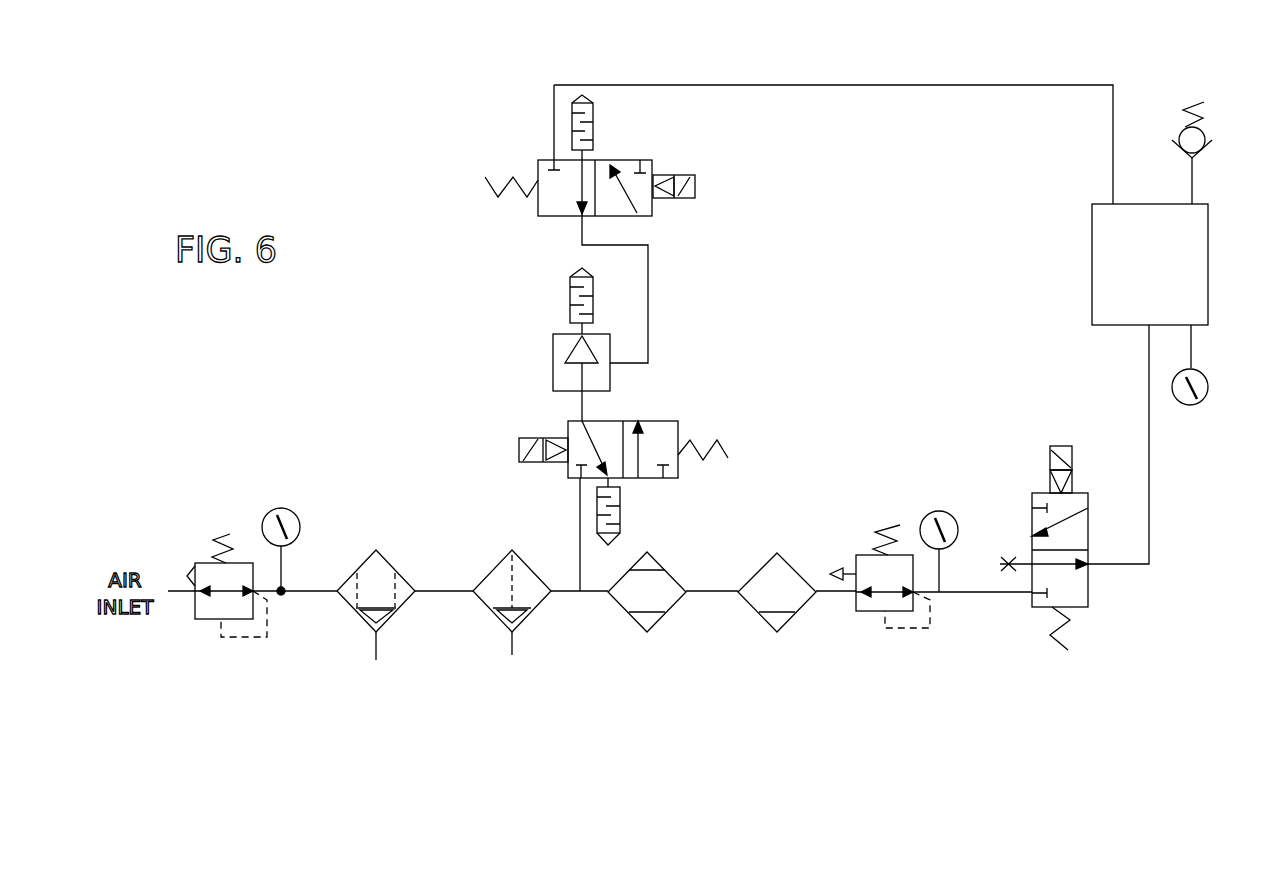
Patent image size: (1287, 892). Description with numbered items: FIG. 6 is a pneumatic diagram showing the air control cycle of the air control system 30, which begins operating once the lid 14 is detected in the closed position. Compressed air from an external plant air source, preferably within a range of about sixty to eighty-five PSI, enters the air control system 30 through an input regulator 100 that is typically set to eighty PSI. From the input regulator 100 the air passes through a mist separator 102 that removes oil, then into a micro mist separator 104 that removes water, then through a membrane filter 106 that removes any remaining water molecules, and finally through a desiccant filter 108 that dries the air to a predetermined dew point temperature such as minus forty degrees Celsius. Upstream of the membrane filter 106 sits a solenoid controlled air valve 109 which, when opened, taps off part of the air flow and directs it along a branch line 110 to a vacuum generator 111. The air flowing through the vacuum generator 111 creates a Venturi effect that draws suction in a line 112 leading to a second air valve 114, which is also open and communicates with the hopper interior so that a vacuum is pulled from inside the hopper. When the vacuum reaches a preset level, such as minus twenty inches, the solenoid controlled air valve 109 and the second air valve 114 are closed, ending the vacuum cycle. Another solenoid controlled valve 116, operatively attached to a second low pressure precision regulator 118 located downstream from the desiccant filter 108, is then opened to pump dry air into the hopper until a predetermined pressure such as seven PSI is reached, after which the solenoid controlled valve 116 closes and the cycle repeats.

The lid 14 is at (1208, 270).
The air control system 30 is at (415, 808).
The input regulator 100 is at (197, 683).
The mist separator 102 is at (300, 746).
The micro mist separator 104 is at (514, 770).
The membrane filter 106 is at (672, 622).
The desiccant filter 108 is at (771, 557).
The solenoid controlled air valve 109 is at (702, 408).
The branch line 110 is at (580, 520).
The vacuum generator 111 is at (632, 339).
The line 112 is at (650, 258).
The second air valve 114 is at (539, 217).
The solenoid controlled valve 116 is at (1113, 590).
The second low pressure precision regulator 118 is at (900, 712).